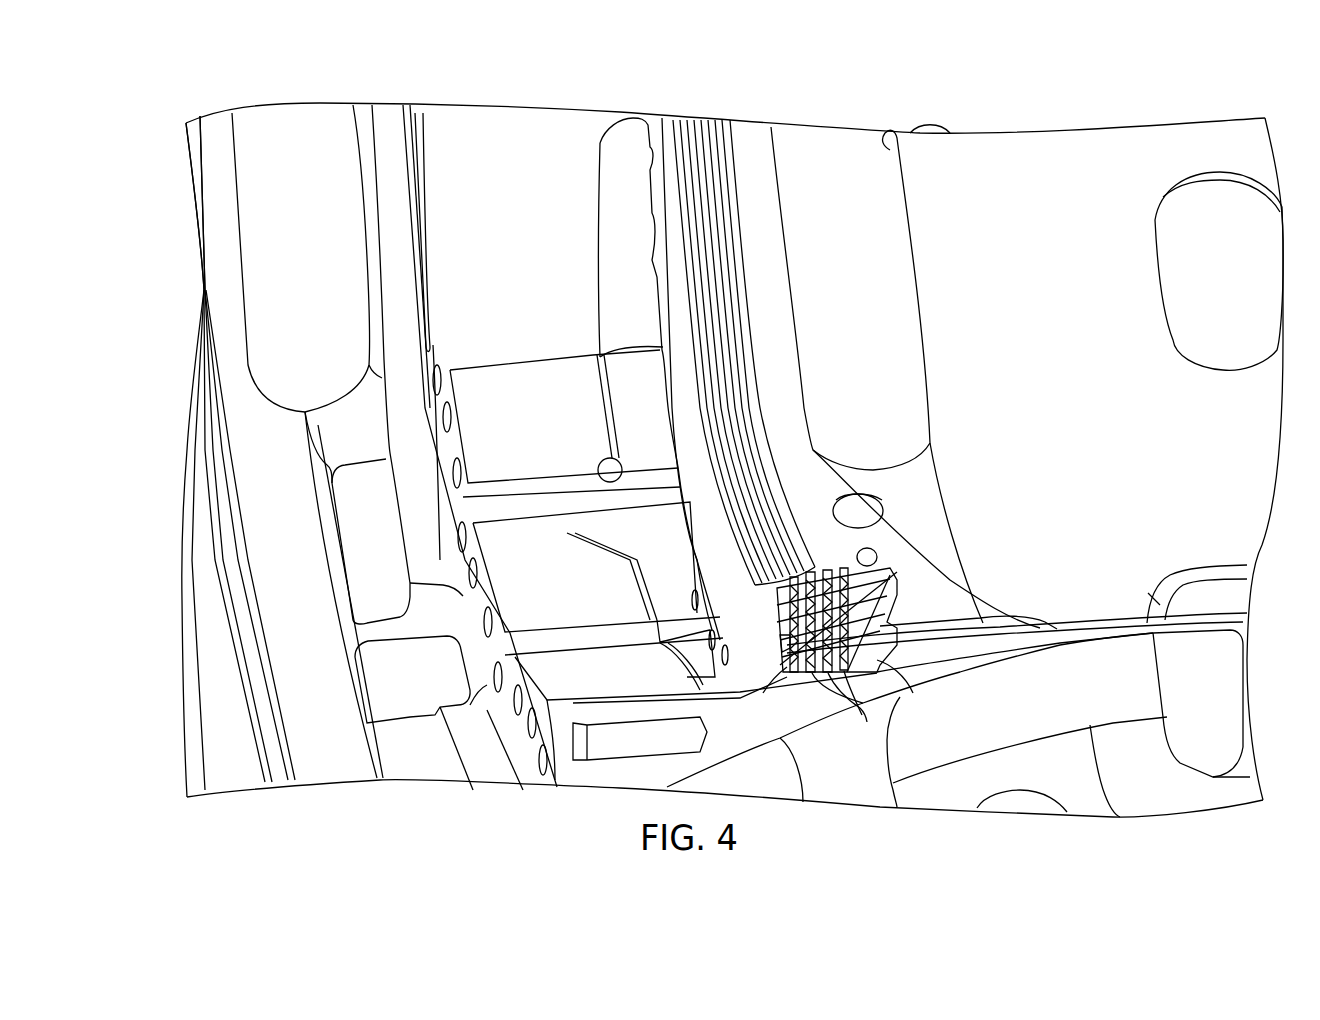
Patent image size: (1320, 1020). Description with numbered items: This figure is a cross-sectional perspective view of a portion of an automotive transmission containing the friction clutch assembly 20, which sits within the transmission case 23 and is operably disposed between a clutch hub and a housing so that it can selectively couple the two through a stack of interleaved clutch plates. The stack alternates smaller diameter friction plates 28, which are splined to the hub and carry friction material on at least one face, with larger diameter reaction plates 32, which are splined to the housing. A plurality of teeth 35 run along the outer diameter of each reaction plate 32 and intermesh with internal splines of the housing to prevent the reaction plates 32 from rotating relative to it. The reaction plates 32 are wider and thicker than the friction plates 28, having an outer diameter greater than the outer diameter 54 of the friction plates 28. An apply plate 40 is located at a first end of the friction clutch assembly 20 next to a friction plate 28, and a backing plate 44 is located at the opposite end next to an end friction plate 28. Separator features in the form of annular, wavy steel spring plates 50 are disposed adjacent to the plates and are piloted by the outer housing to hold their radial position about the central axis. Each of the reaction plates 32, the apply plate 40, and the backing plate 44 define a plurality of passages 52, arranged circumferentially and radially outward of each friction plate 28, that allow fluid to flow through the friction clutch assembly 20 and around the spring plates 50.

The friction clutch assembly 20 is at (772, 105).
The transmission case 23 is at (452, 120).
The friction plates 28 is at (690, 122).
The reaction plates 32 is at (718, 122).
The teeth 35 is at (866, 722).
The apply plate 40 is at (663, 123).
The backing plate 44 is at (787, 333).
The spring plates 50 is at (887, 622).
The passages 52 is at (763, 693).
The outer diameter 54 is at (790, 614).